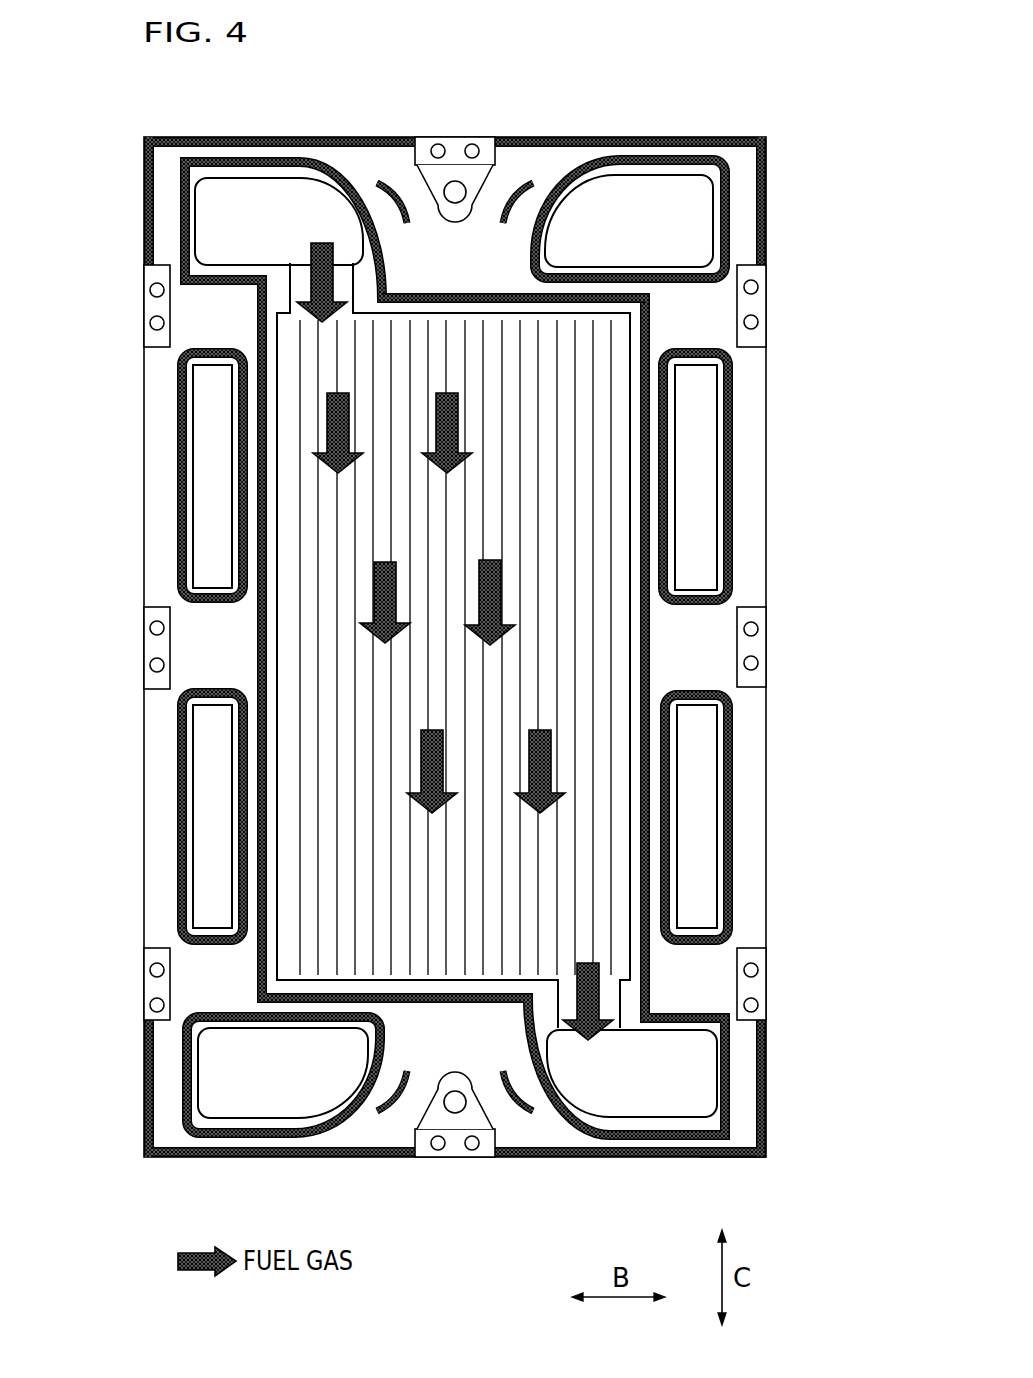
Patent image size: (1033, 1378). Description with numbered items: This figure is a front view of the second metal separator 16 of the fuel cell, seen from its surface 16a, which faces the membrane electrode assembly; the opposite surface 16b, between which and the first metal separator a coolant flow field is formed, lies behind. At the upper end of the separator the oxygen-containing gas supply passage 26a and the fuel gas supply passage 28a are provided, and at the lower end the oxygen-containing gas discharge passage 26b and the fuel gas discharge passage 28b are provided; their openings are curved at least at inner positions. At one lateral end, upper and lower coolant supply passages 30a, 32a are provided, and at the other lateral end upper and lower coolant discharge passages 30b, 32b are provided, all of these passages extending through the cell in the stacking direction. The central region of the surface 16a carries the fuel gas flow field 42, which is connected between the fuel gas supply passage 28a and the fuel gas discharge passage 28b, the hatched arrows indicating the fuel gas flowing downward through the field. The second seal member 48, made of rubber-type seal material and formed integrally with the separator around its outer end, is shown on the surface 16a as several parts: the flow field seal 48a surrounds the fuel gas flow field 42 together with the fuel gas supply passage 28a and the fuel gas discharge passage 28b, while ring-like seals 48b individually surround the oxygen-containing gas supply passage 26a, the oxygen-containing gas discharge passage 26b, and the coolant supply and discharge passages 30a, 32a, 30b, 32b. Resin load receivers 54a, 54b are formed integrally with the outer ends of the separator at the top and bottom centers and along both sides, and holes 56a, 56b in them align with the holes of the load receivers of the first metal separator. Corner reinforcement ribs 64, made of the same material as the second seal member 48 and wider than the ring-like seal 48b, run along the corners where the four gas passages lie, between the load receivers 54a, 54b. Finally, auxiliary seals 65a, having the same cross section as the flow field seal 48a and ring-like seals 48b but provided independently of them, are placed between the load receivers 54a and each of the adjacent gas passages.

The second metal separator 16 is at (670, 62).
The surface 16a is at (675, 1120).
The surface 16b is at (723, 1160).
The oxygen-containing gas supply passage 26a is at (629, 221).
The oxygen-containing gas discharge passage 26b is at (283, 1073).
The fuel gas supply passage 28a is at (279, 221).
The fuel gas discharge passage 28b is at (632, 1073).
The coolant supply passage 30a is at (695, 425).
The coolant discharge passage 30b is at (212, 425).
The coolant supply passage 32a is at (693, 764).
The coolant discharge passage 32b is at (212, 765).
The fuel gas flow field 42 is at (337, 652).
The second seal member 48 is at (700, 137).
The flow field seal 48a is at (445, 293).
The ring-like seal 48b is at (732, 218).
The load receiver 54a is at (453, 128).
The load receiver 54b is at (776, 296).
The hole 56a is at (150, 290).
The hole 56b is at (150, 323).
The corner reinforcement rib 64 is at (271, 137).
The auxiliary seal 65a is at (378, 180).